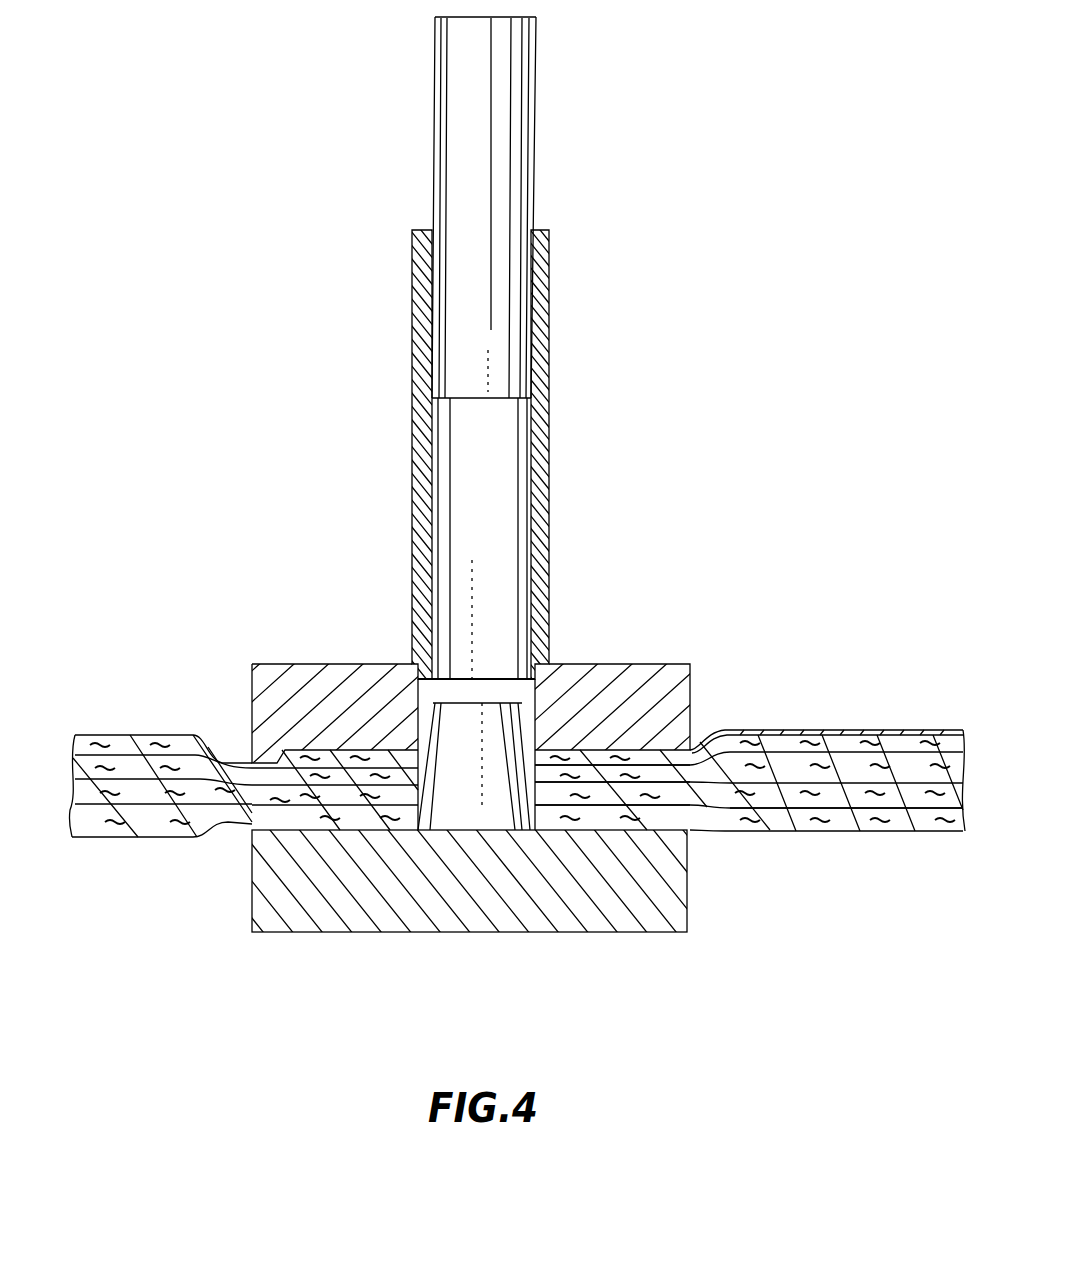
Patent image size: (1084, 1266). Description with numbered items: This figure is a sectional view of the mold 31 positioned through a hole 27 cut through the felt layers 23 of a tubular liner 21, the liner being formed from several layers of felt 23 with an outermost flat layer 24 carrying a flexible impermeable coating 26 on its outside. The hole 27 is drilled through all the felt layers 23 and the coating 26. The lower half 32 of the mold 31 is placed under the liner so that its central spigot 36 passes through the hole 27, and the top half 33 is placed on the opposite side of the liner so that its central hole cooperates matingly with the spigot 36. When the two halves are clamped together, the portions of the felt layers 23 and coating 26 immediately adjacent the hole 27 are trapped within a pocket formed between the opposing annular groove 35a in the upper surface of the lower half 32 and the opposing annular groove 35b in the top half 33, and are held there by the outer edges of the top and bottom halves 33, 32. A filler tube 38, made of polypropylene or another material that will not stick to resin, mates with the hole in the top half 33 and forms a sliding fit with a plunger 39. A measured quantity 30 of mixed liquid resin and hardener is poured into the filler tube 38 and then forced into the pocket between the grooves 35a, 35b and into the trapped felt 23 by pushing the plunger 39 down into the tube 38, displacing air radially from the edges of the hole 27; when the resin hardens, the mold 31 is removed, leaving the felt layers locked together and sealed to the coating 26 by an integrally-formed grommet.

The tubular liner 21 is at (521, 768).
The layers of felt 23 is at (800, 805).
The outermost flat layer 24 is at (965, 732).
The flexible impermeable coating 26 is at (826, 732).
The hole 27 is at (542, 778).
The measured quantity of resin 30 is at (465, 690).
The mold 31 is at (571, 494).
The lower half of mold 32 is at (527, 915).
The top half of mold 33 is at (576, 680).
The annular groove of lower half 35a is at (625, 822).
The annular groove of top half 35b is at (676, 757).
The central spigot 36 is at (458, 815).
The filler tube 38 is at (540, 388).
The plunger 39 is at (495, 134).